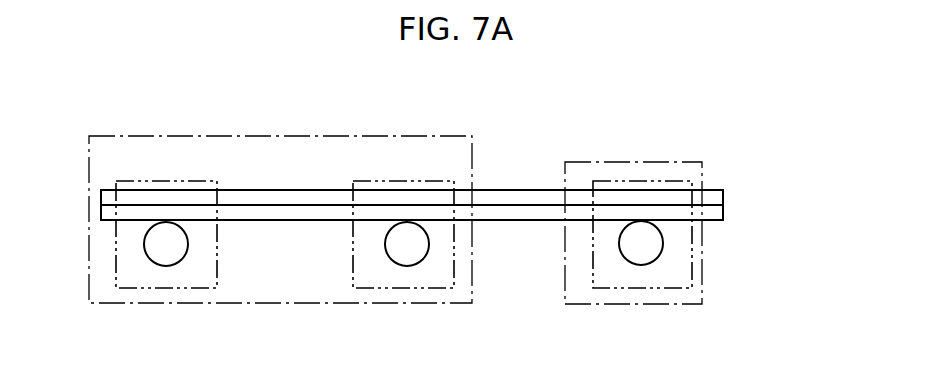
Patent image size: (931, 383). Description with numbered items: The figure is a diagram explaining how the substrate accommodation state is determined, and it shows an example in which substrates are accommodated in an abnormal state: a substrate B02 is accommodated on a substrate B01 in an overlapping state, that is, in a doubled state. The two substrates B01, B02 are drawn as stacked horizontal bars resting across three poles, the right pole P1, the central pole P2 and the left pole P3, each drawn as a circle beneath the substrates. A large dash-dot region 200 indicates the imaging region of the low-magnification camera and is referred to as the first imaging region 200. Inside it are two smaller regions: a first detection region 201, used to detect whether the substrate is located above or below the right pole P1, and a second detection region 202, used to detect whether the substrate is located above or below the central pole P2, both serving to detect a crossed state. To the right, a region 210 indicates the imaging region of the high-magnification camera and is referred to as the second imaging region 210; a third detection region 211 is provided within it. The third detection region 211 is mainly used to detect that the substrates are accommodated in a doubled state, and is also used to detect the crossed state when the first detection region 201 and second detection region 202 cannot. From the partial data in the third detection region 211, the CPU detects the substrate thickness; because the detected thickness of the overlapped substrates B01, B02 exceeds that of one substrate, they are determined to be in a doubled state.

The first imaging region 200 is at (288, 136).
The first detection region 201 is at (170, 181).
The second detection region 202 is at (400, 181).
The second imaging region 210 is at (638, 181).
The third detection region 211 is at (692, 275).
The substrate B01 is at (724, 215).
The substrate B02 is at (724, 195).
The right pole P1 is at (166, 266).
The central pole P2 is at (407, 266).
The left pole P3 is at (641, 265).